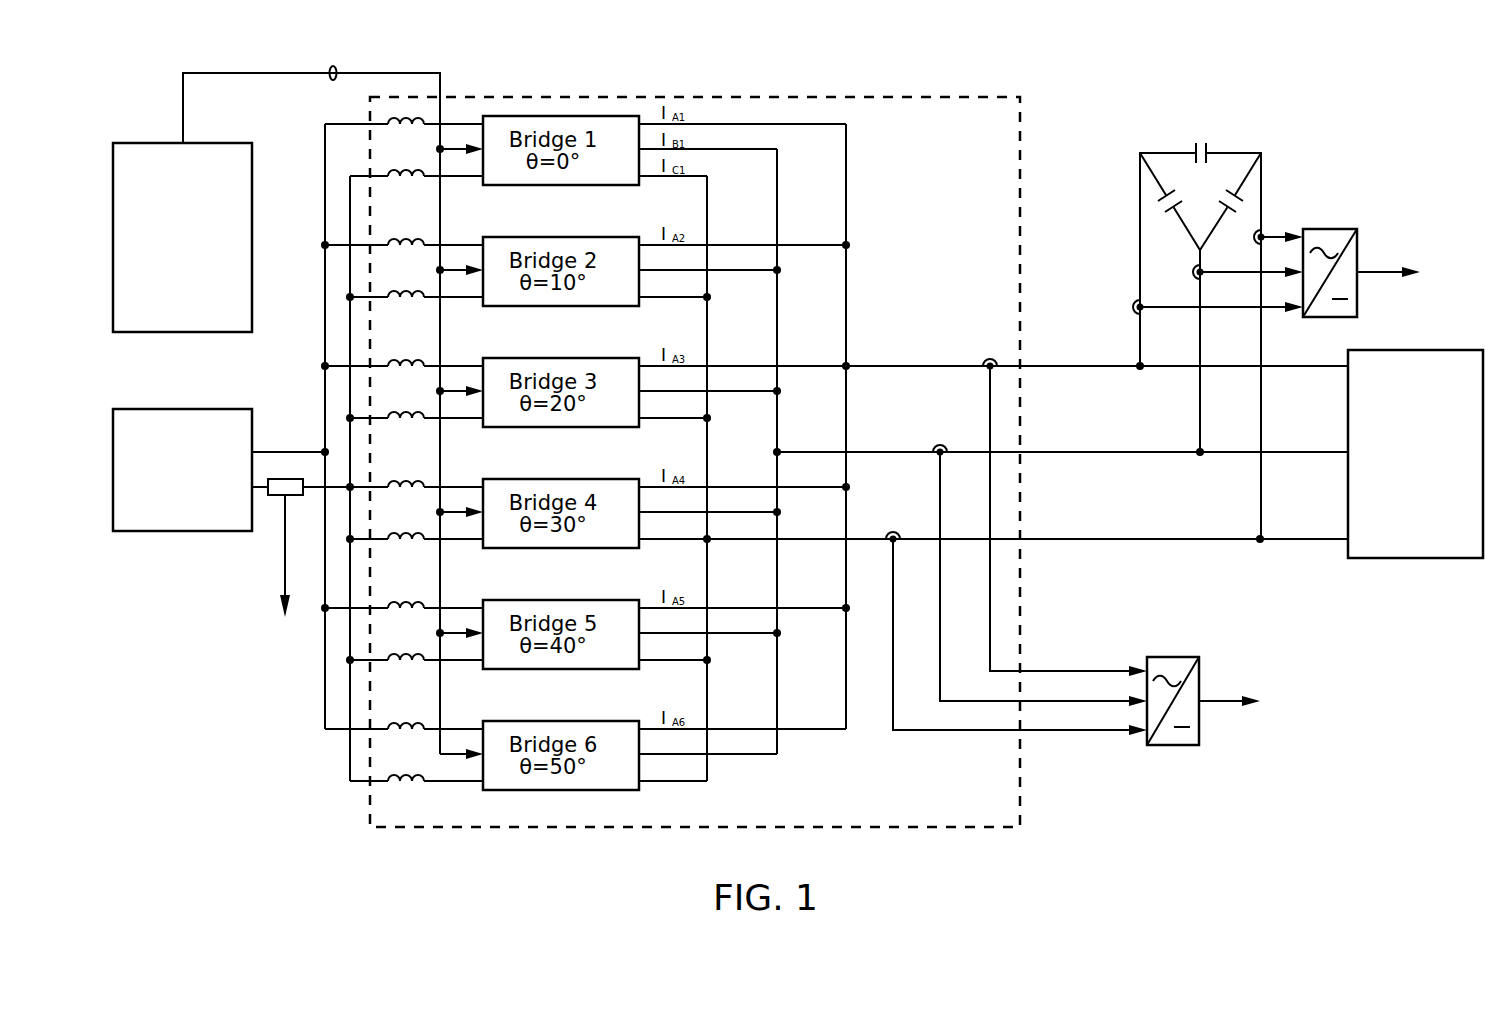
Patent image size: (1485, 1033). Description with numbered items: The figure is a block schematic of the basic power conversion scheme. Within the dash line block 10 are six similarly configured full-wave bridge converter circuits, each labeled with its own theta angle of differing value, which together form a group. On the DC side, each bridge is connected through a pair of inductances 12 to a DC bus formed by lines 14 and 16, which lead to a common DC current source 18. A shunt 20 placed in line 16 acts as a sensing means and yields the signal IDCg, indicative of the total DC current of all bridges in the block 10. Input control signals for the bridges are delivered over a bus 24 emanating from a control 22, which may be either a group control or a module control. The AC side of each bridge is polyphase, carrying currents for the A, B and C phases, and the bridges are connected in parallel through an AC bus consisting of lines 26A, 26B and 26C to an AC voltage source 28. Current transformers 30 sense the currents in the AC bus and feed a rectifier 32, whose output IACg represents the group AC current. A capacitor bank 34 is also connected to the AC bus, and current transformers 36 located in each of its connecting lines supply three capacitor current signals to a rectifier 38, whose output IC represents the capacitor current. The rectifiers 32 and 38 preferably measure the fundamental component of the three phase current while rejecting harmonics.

The dash line block 10 is at (1022, 132).
The inductances 12 is at (409, 168).
The DC bus line 14 is at (281, 452).
The DC bus line 16 is at (262, 489).
The DC current source 18 is at (220, 409).
The shunt 20 is at (297, 496).
The control 22 is at (252, 200).
The bus 24 is at (297, 73).
The AC bus line 26A is at (1083, 367).
The AC bus line 26B is at (1083, 454).
The AC bus line 26C is at (1069, 540).
The AC voltage source 28 is at (1437, 558).
The current transformers 30 is at (983, 362).
The rectifier 32 is at (1162, 657).
The capacitor bank 34 is at (1214, 190).
The current transformers 36 is at (1133, 307).
The rectifier 38 is at (1313, 229).